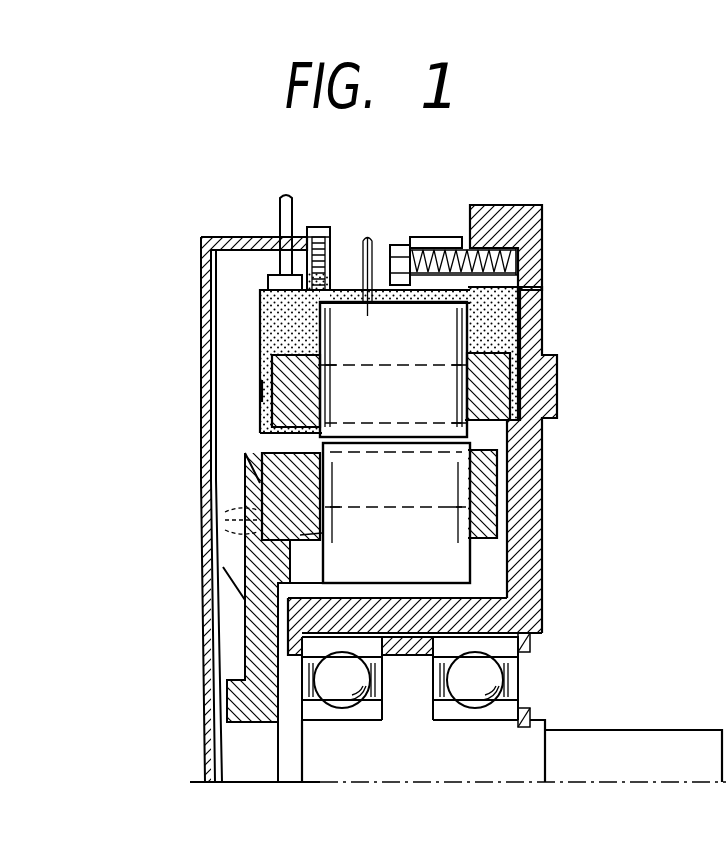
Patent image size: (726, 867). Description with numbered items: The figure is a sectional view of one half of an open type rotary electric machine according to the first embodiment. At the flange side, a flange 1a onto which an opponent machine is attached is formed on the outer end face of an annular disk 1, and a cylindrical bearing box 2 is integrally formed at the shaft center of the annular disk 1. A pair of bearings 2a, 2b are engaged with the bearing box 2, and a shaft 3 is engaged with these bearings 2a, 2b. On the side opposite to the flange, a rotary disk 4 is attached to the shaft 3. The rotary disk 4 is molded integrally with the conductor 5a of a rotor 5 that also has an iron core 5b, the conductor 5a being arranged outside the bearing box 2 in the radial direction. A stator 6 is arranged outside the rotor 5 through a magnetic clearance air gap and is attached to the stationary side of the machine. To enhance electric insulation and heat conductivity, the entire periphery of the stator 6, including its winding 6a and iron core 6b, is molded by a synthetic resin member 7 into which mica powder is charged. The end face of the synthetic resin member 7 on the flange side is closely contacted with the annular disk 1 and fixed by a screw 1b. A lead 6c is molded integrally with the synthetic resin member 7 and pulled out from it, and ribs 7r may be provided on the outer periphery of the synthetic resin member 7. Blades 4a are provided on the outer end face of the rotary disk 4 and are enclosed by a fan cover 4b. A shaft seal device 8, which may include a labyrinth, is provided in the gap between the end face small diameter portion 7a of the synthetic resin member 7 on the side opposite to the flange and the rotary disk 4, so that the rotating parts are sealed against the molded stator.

The annular disk 1 is at (523, 475).
The flange 1a is at (537, 313).
The screw 1b is at (400, 262).
The bearing box 2 is at (453, 605).
The bearing 2a is at (470, 688).
The bearing 2b is at (336, 692).
The shaft 3 is at (603, 743).
The rotary disk 4 is at (224, 509).
The blades 4a is at (205, 607).
The fan cover 4b is at (205, 365).
The rotor 5 is at (132, 453).
The conductor 5a is at (298, 490).
The iron core 5b is at (337, 530).
The stator 6 is at (615, 340).
The winding 6a is at (497, 398).
The iron core 6b is at (535, 338).
The lead 6c is at (278, 213).
The synthetic resin member 7 is at (321, 301).
The end face small diameter portion 7a is at (262, 380).
The ribs 7r is at (347, 255).
The shaft seal device 8 is at (254, 390).